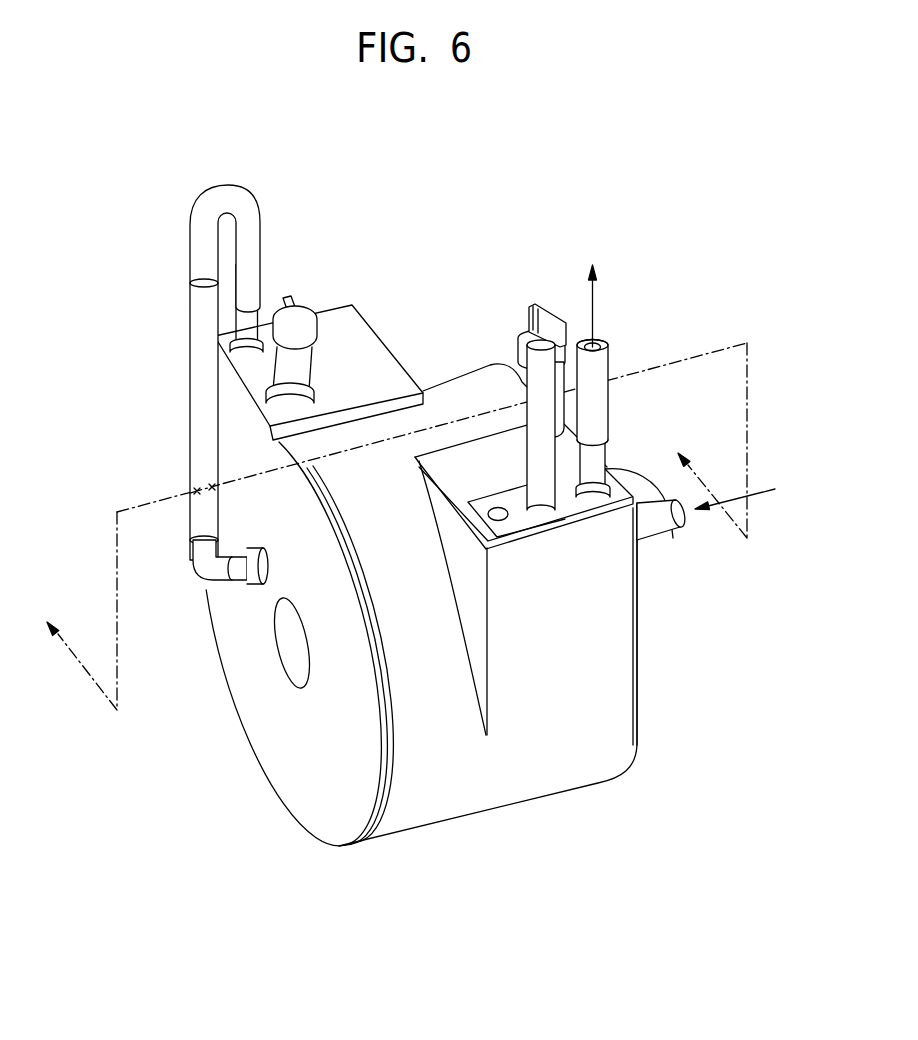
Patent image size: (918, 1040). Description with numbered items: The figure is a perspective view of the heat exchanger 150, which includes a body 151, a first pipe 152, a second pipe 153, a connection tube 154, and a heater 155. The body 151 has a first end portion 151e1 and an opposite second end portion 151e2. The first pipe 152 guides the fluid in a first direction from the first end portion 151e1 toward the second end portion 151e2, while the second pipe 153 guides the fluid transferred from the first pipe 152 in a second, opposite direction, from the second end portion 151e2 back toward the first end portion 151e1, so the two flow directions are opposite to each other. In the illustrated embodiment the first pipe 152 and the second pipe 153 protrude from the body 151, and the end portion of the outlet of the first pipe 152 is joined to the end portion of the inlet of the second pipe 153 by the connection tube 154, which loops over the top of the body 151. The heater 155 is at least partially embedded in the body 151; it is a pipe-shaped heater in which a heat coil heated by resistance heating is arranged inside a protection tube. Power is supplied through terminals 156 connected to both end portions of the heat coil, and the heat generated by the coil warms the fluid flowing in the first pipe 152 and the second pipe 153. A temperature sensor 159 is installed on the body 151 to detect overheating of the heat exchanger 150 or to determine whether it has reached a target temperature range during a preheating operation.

The heat exchanger 150 is at (576, 156).
The body 151 is at (485, 763).
The first end portion 151e1 is at (638, 653).
The second end portion 151e2 is at (293, 787).
The first pipe 152 is at (217, 580).
The second pipe 153 is at (256, 323).
The connection tube 154 is at (207, 243).
The heater 155 is at (555, 405).
The terminals 156 is at (531, 306).
The temperature sensor 159 is at (522, 332).